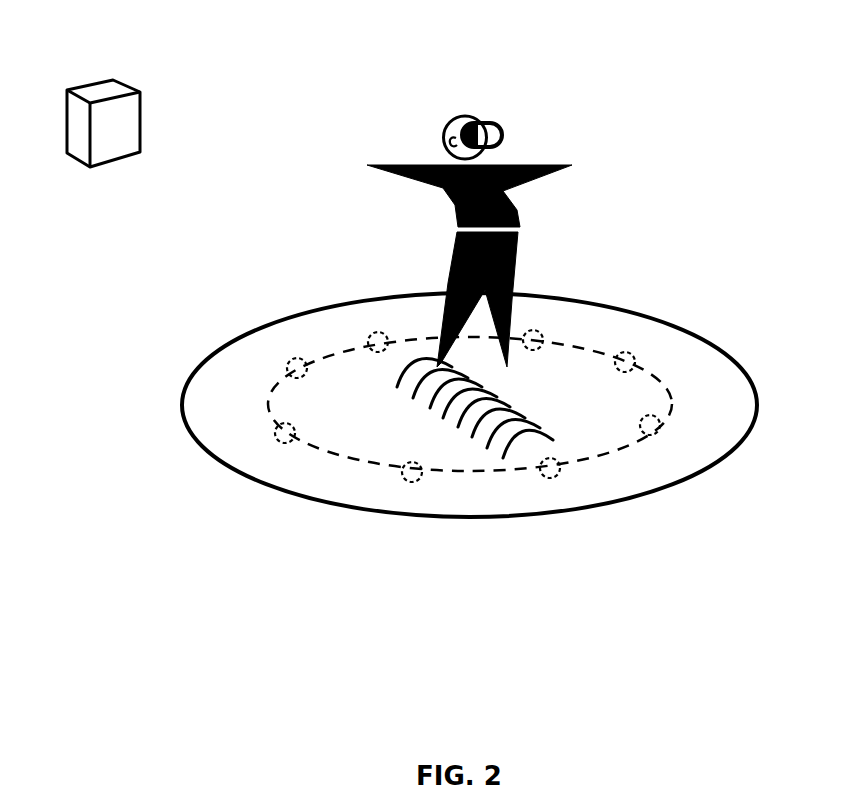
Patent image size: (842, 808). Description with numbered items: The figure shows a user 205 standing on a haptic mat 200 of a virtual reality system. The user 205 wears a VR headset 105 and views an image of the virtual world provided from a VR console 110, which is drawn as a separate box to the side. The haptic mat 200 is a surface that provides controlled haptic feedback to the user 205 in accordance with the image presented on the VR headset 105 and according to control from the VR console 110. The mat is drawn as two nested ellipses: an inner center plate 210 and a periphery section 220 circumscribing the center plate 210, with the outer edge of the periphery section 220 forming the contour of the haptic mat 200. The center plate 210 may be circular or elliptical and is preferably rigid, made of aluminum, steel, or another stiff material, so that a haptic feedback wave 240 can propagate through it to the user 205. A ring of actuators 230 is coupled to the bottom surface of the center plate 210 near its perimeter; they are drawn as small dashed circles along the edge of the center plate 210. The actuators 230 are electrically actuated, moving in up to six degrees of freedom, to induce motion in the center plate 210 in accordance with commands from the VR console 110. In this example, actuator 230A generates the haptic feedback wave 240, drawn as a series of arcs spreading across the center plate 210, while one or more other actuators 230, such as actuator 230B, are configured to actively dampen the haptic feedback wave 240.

The VR console 110 is at (152, 100).
The user 205 is at (413, 137).
The VR headset 105 is at (505, 116).
The haptic mat 200 is at (434, 426).
The periphery section 220 is at (685, 385).
The center plate 210 is at (559, 401).
The actuators 230 is at (462, 432).
The actuator 230A is at (558, 482).
The actuator 230B is at (366, 330).
The haptic feedback wave 240 is at (416, 416).